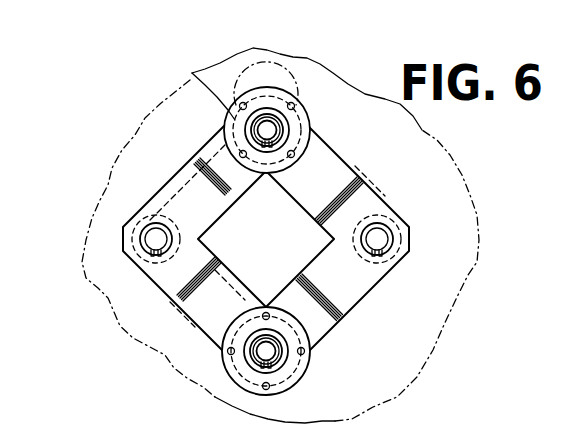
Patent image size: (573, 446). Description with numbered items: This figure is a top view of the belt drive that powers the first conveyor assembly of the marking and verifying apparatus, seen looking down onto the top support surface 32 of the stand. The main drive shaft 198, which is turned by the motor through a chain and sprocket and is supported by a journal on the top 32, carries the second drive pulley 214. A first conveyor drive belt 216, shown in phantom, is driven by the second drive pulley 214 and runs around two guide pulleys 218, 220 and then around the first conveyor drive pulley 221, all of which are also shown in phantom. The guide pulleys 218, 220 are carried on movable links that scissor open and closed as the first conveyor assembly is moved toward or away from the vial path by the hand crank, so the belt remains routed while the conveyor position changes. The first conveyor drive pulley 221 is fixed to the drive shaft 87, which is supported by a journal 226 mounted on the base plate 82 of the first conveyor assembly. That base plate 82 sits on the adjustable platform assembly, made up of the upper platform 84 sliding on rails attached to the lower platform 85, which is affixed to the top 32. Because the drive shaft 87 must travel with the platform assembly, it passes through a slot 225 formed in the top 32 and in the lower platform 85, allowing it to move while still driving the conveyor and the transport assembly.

The top support surface 32 is at (537, 213).
The base plate 82 is at (437, 137).
The upper platform 84 is at (536, 160).
The lower platform 85 is at (536, 186).
The drive shaft 87 is at (294, 107).
The main drive shaft 198 is at (255, 363).
The second drive pulley 214 is at (297, 368).
The first conveyor drive belt 216 is at (367, 181).
The guide pulley 218 is at (126, 225).
The guide pulley 220 is at (412, 247).
The first conveyor drive pulley 221 is at (311, 121).
The slot 225 is at (283, 63).
The journal 226 is at (193, 73).